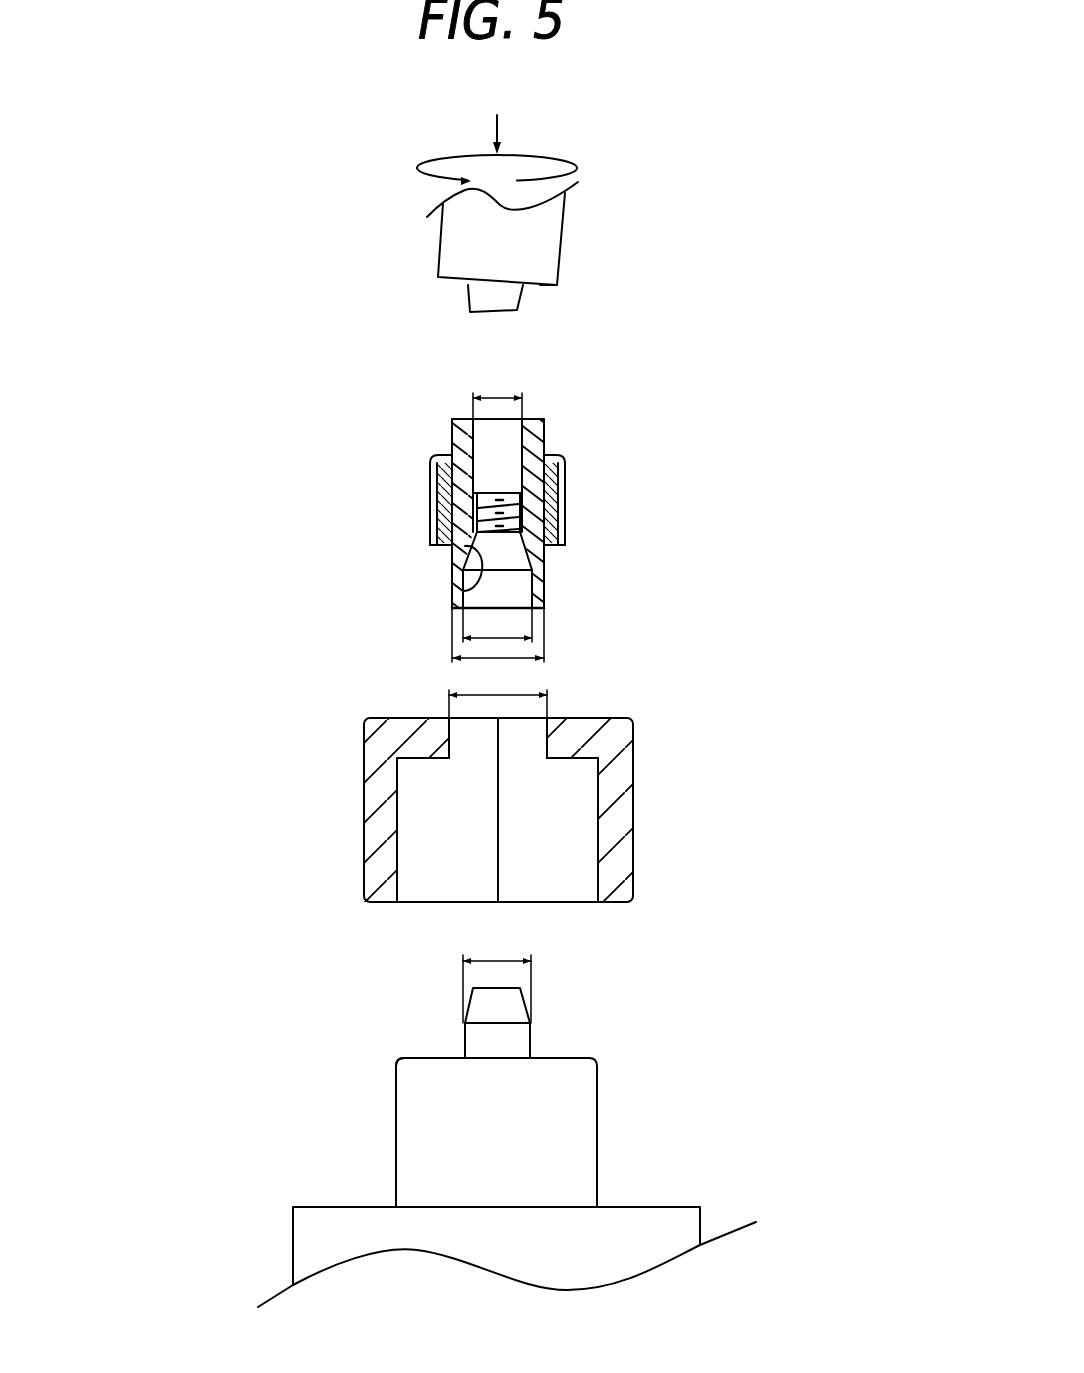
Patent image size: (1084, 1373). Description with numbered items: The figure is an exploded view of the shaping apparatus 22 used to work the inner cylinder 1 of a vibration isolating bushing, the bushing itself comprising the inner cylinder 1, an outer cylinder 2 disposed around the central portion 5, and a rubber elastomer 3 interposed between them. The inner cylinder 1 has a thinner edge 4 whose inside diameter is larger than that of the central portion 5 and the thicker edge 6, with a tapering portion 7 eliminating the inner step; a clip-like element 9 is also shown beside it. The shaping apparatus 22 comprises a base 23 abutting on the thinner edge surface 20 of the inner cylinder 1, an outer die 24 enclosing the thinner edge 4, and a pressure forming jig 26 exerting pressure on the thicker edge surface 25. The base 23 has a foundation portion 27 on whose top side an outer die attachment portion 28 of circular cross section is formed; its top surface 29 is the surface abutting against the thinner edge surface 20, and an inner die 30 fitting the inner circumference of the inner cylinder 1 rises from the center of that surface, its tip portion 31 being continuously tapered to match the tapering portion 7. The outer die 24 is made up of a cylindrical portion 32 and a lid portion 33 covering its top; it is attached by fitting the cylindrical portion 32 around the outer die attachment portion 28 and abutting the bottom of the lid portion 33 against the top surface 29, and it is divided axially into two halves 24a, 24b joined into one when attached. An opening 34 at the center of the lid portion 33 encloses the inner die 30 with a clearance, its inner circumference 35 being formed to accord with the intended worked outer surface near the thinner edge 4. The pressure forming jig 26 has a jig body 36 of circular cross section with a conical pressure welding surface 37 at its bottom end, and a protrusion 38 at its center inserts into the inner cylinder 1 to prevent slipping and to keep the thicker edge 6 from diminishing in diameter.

The inner cylinder 1 is at (519, 478).
The outer cylinder 2 is at (582, 496).
The rubber elastomer 3 is at (563, 478).
The thinner edge 4 is at (540, 593).
The central portion 5 is at (530, 512).
The thicker edge 6 is at (537, 441).
The tapering portion 7 is at (463, 591).
The left engaging clip 9 is at (433, 457).
The thinner edge surface 20 is at (541, 493).
The shaping apparatus 22 is at (266, 648).
The base 23 is at (523, 1117).
The outer die 24 is at (522, 808).
The half of outer die 24a is at (563, 835).
The half of outer die 24b is at (438, 833).
The thicker edge surface 25 is at (455, 419).
The pressure forming jig 26 is at (525, 222).
The foundation portion 27 is at (341, 1232).
The outer die attachment portion 28 is at (575, 1158).
The top surface 29 is at (428, 1057).
The inner die 30 is at (515, 1047).
The tip portion 31 is at (510, 1012).
The cylindrical portion 32 is at (618, 817).
The lid portion 33 is at (563, 733).
The opening 34 is at (468, 733).
The inner circumference 35 is at (545, 738).
The pressure forming jig body 36 is at (545, 238).
The pressure welding surface 37 is at (548, 287).
The protrusion 38 is at (487, 292).